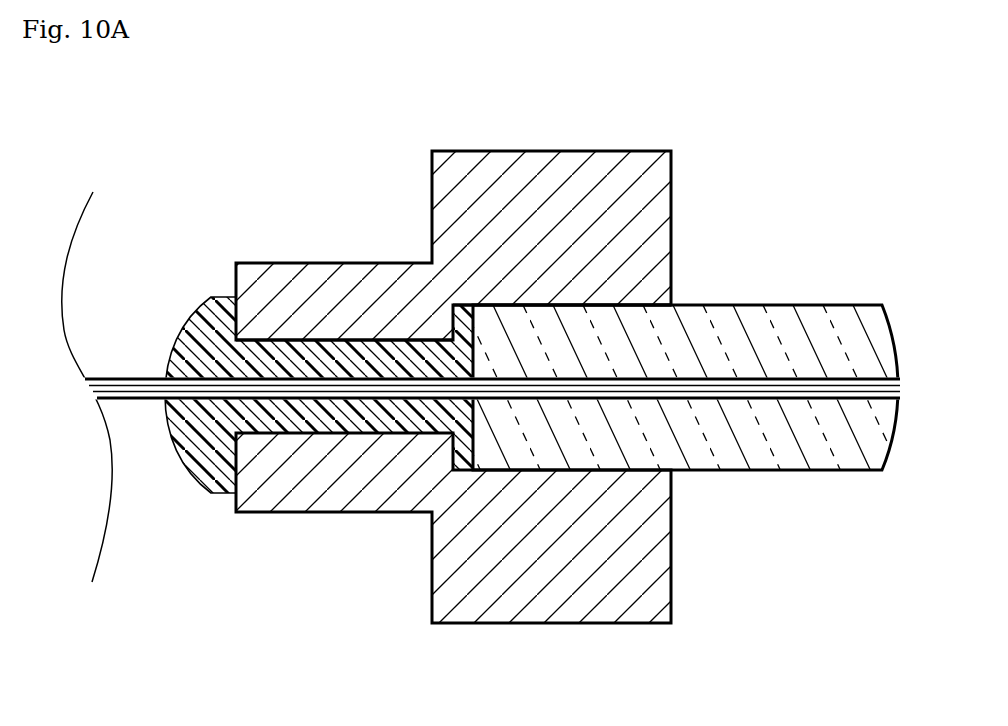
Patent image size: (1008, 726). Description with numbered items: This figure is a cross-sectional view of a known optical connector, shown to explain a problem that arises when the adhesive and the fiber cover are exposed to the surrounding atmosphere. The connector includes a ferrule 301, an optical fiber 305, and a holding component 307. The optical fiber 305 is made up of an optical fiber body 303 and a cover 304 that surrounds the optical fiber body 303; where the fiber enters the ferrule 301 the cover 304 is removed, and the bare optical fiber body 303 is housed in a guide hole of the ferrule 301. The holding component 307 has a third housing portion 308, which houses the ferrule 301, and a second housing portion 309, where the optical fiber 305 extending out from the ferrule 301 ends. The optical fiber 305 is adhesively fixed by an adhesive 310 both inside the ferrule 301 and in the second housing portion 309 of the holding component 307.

The ferrule 301 is at (800, 305).
The optical fiber body 303 is at (352, 387).
The cover 304 is at (288, 395).
The optical fiber 305 is at (491, 499).
The holding component 307 is at (671, 181).
The third housing portion 308 is at (580, 307).
The second housing portion 309 is at (310, 343).
The adhesive 310 is at (445, 370).